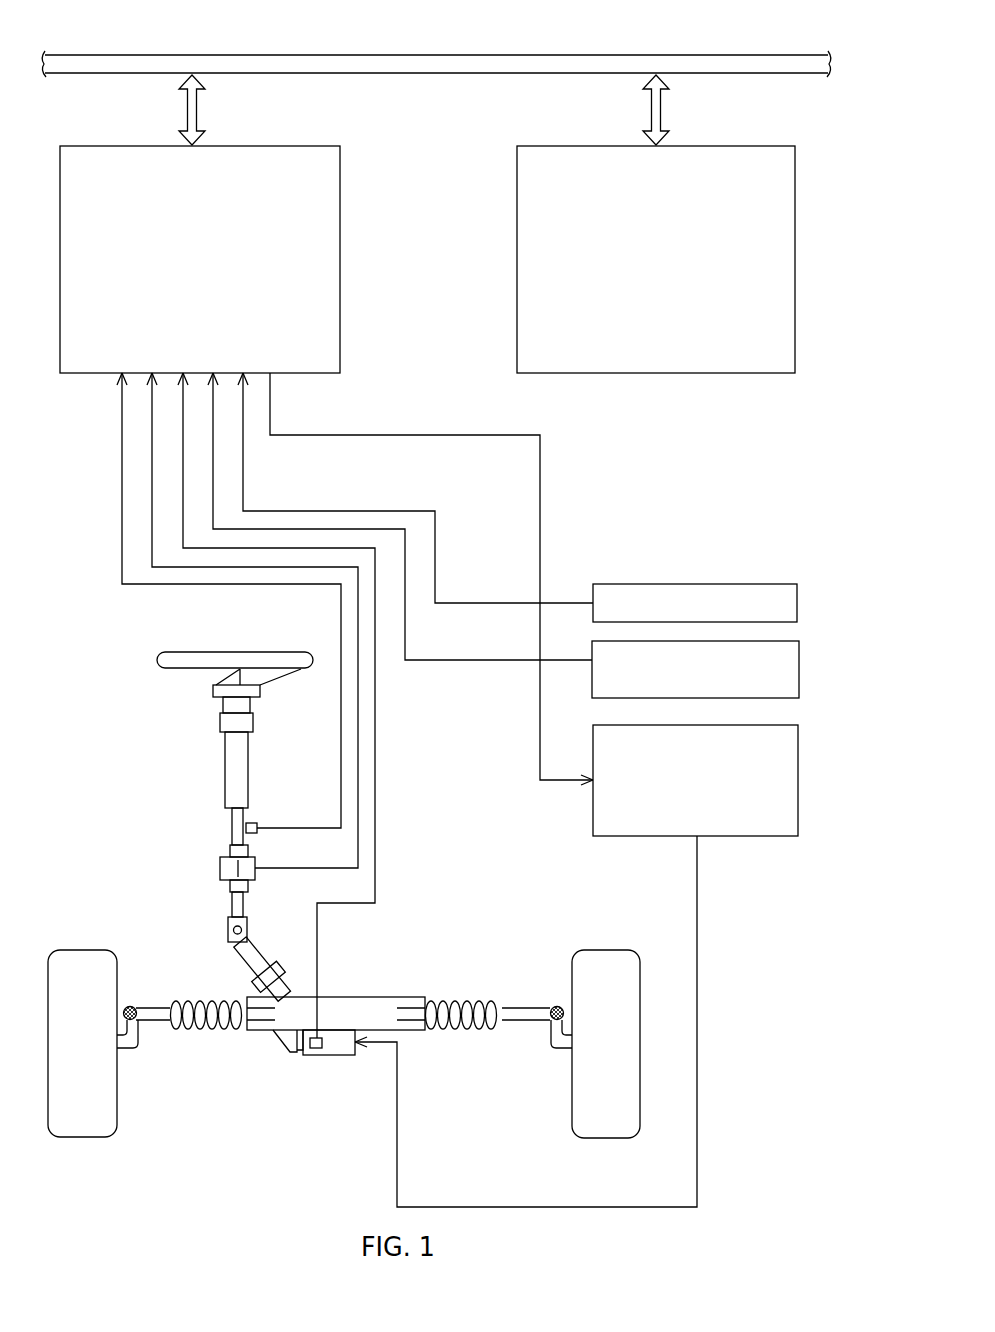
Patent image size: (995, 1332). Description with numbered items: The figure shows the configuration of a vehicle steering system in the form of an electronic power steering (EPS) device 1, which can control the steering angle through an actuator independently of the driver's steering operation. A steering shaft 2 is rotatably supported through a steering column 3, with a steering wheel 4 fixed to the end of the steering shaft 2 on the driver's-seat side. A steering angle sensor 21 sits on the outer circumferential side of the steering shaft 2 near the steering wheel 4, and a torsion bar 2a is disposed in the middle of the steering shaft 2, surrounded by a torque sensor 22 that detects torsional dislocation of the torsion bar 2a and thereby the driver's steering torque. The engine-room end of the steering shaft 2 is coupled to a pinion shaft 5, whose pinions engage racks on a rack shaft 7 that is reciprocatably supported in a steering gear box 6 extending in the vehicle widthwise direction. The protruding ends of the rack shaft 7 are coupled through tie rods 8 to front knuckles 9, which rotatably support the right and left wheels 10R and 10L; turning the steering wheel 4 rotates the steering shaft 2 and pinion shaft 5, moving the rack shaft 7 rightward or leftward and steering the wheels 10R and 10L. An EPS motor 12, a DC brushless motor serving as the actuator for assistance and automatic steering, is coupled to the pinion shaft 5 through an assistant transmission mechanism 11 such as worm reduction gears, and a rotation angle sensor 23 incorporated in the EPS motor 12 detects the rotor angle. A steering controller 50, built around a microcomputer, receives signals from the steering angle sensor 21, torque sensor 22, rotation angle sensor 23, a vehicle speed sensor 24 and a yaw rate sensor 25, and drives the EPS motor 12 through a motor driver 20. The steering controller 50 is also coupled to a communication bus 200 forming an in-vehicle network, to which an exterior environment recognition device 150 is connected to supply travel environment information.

The electronic power steering (EPS) device 1 is at (85, 663).
The communication bus 200 is at (440, 55).
The steering controller 50 is at (266, 146).
The exterior environment recognition device 150 is at (760, 146).
The yaw rate sensor 25 is at (797, 603).
The vehicle speed sensor 24 is at (799, 660).
The motor driver 20 is at (798, 780).
The steering wheel 4 is at (238, 652).
The steering column 3 is at (225, 765).
The steering shaft 2 is at (232, 830).
The steering angle sensor 21 is at (257, 825).
The torque sensor 22 is at (255, 866).
The torsion bar 2a is at (220, 868).
The pinion shaft 5 is at (240, 957).
The steering gear box 6 is at (348, 997).
The rack shaft 7 is at (409, 1008).
The tie rods 8 is at (168, 1022).
The front knuckles 9 is at (122, 1052).
The right wheel 10R is at (83, 1137).
The left wheel 10L is at (606, 1138).
The assistant transmission mechanism 11 is at (280, 1045).
The electric power steering (EPS) motor 12 is at (340, 1055).
The rotation angle sensor 23 is at (316, 1055).